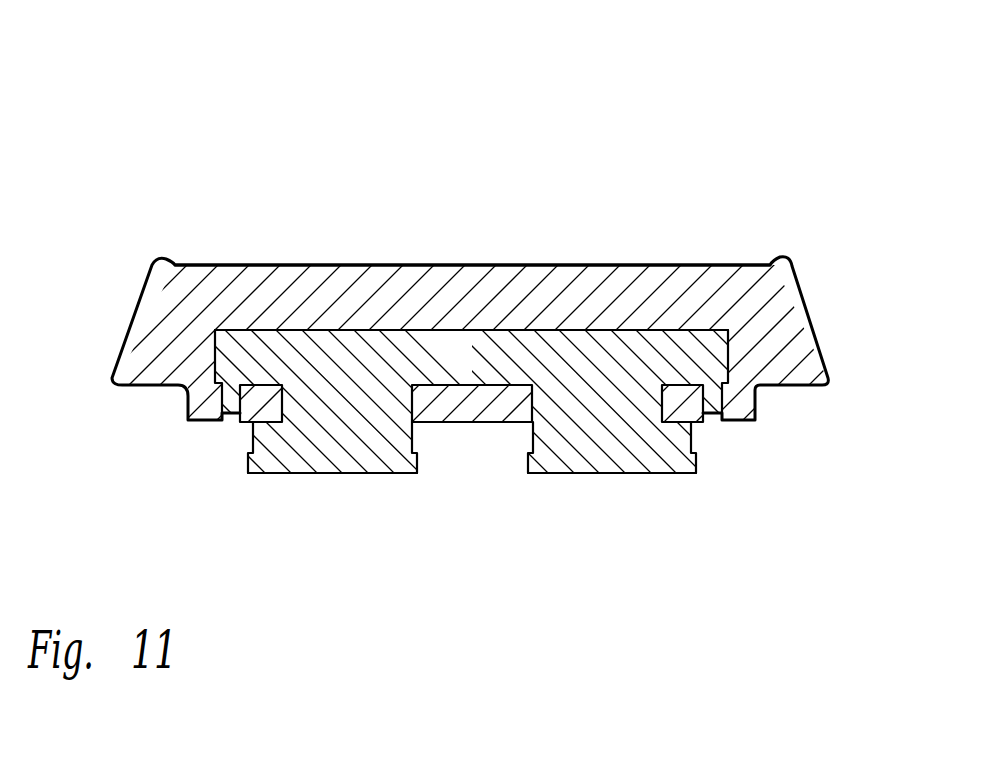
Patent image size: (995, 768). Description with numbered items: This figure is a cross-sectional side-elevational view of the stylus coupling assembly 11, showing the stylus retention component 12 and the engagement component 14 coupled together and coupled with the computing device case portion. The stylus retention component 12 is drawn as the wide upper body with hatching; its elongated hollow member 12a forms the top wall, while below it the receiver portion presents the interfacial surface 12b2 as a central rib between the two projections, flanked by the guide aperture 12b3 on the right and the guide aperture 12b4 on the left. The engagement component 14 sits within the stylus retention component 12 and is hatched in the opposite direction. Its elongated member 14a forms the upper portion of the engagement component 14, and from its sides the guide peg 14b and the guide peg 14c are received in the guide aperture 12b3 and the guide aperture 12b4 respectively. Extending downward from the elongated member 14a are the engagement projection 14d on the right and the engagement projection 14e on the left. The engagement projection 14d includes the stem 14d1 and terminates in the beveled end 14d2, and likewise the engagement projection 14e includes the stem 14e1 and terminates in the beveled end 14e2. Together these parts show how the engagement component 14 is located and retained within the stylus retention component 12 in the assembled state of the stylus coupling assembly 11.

The stylus coupling assembly 11 is at (648, 62).
The stylus retention component 12 is at (255, 175).
The elongated hollow member 12a is at (700, 195).
The interfacial surface 12b2 is at (485, 423).
The guide aperture 12b3 is at (708, 425).
The guide aperture 12b4 is at (229, 424).
The engagement component 14 is at (557, 530).
The elongated member 14a is at (460, 328).
The guide peg 14b is at (722, 403).
The guide peg 14c is at (220, 403).
The engagement projection 14d is at (680, 525).
The stem 14d1 is at (600, 408).
The beveled end 14d2 is at (612, 475).
The engagement projection 14e is at (343, 525).
The stem 14e1 is at (343, 410).
The beveled end 14e2 is at (280, 475).